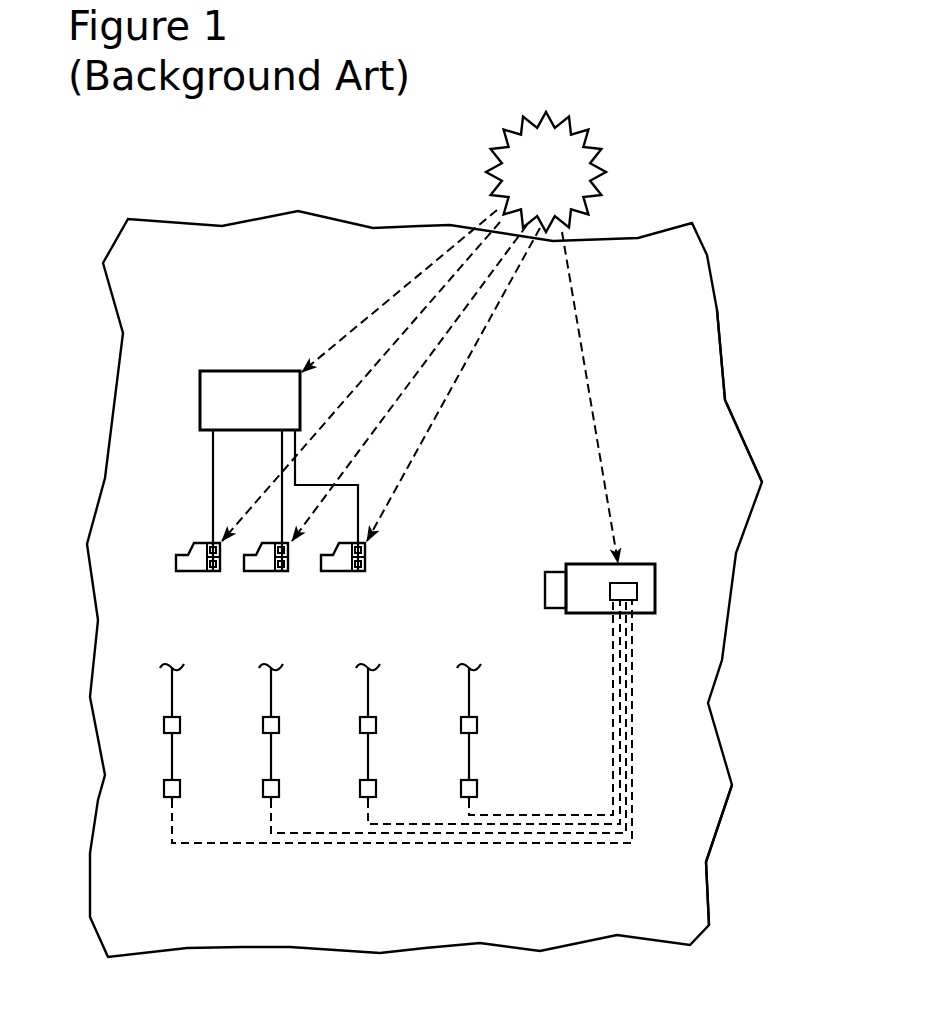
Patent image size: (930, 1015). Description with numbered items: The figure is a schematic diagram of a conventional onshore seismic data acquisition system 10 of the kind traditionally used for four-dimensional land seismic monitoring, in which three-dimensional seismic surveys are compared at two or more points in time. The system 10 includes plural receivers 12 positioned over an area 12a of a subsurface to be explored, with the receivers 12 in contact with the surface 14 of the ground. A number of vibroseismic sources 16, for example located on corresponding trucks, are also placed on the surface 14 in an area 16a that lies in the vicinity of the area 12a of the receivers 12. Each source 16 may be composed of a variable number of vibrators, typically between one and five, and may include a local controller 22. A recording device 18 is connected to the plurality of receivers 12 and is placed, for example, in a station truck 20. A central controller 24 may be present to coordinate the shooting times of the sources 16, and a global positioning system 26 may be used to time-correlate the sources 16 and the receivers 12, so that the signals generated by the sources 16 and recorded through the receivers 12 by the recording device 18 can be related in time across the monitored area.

The system 10 is at (335, 160).
The receivers 12 is at (164, 722).
The area of the receivers 12a is at (682, 848).
The surface of the ground 14 is at (86, 583).
The vibroseismic sources 16 is at (196, 561).
The area of the sources 16a is at (714, 426).
The recording device 18 is at (628, 592).
The station truck 20 is at (644, 560).
The local controller 22 is at (213, 571).
The central controller 24 is at (215, 370).
The global positioning system (GPS) 26 is at (577, 133).